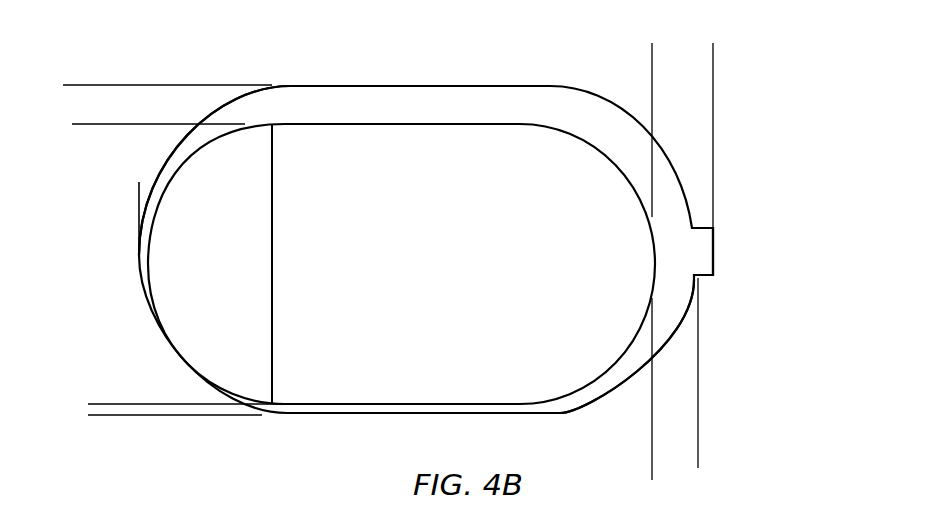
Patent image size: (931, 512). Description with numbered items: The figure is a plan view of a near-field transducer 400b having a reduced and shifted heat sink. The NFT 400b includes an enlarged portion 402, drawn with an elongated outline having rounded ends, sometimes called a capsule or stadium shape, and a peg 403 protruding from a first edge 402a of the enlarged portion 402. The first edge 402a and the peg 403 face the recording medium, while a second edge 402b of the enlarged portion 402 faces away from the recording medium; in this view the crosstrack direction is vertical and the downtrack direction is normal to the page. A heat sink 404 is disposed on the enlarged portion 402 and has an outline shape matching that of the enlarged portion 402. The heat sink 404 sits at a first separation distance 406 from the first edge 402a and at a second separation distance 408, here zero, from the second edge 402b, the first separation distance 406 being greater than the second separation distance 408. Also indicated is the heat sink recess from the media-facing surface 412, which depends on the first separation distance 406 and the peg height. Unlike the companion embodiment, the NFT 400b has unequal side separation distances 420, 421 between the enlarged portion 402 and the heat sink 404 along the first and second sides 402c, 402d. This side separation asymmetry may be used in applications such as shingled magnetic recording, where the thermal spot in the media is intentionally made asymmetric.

The near-field transducer 400b is at (445, 259).
The enlarged portion 402 is at (412, 259).
The first edge 402a is at (694, 291).
The second edge 402b is at (139, 270).
The first side 402c is at (383, 405).
The second side 402d is at (389, 124).
The peg 403 is at (713, 252).
The heat sink 404 is at (177, 324).
The first separation distance 406 is at (600, 448).
The second separation distance 408 is at (139, 227).
The heat sink recess from the media-facing surface 412 is at (600, 57).
The side separation distance 420 is at (87, 136).
The side separation distance 421 is at (98, 370).